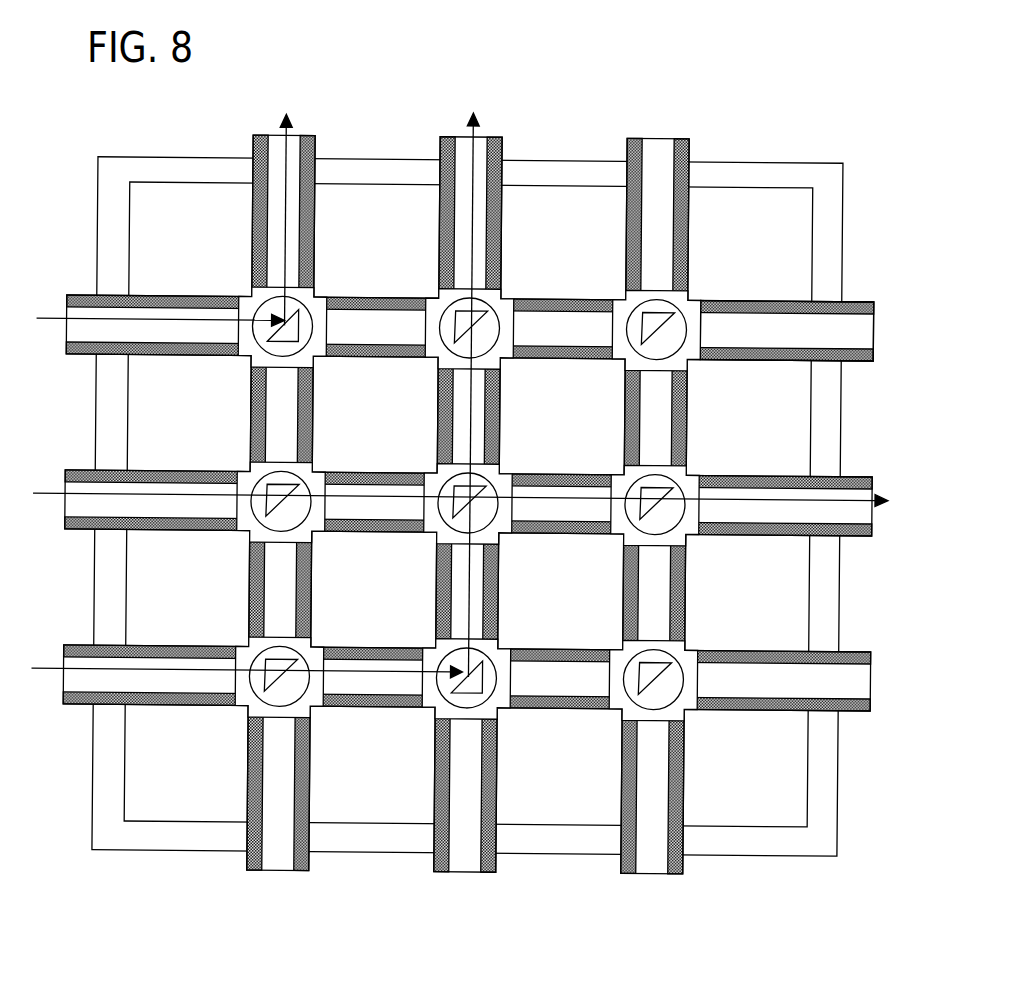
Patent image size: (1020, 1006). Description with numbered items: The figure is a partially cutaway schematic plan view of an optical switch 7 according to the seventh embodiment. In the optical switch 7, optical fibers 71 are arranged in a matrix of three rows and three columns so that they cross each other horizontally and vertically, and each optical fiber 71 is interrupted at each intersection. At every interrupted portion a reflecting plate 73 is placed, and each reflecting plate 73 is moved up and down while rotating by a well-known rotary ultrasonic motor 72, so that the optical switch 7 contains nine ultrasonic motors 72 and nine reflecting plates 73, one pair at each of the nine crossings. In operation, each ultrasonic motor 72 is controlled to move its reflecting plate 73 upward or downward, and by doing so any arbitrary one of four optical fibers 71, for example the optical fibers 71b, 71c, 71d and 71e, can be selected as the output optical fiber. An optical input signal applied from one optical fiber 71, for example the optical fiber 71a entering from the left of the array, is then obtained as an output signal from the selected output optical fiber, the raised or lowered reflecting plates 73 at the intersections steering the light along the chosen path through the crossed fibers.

The optical switch 7 is at (140, 106).
The optical fiber 71 is at (72, 353).
The optical fiber 71a is at (88, 312).
The optical fiber 71b is at (278, 138).
The optical fiber 71c is at (468, 143).
The optical fiber 71d is at (657, 148).
The optical fiber 71e is at (870, 337).
The rotary ultrasonic motor 72 is at (308, 340).
The reflecting plate 73 is at (310, 302).